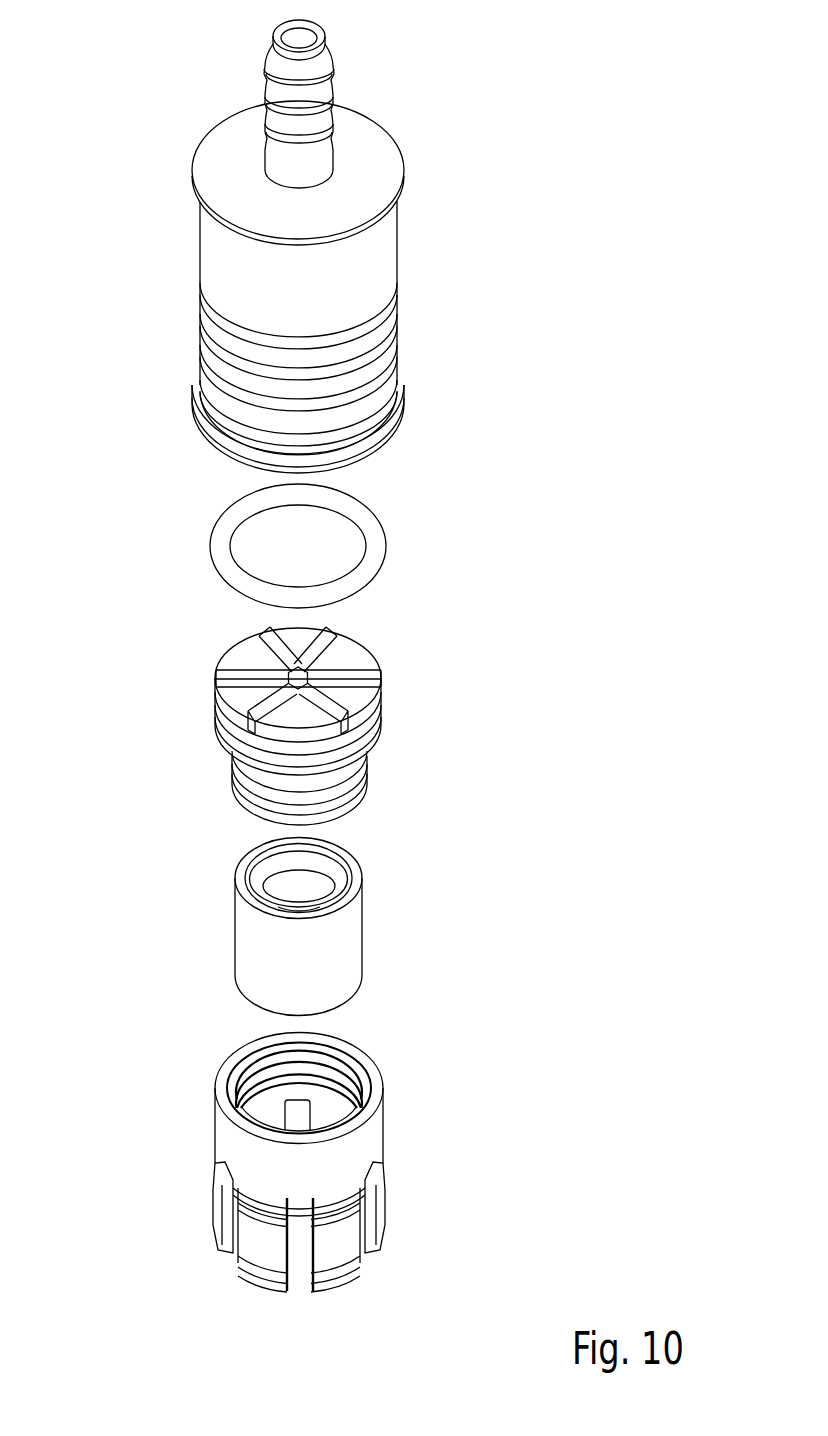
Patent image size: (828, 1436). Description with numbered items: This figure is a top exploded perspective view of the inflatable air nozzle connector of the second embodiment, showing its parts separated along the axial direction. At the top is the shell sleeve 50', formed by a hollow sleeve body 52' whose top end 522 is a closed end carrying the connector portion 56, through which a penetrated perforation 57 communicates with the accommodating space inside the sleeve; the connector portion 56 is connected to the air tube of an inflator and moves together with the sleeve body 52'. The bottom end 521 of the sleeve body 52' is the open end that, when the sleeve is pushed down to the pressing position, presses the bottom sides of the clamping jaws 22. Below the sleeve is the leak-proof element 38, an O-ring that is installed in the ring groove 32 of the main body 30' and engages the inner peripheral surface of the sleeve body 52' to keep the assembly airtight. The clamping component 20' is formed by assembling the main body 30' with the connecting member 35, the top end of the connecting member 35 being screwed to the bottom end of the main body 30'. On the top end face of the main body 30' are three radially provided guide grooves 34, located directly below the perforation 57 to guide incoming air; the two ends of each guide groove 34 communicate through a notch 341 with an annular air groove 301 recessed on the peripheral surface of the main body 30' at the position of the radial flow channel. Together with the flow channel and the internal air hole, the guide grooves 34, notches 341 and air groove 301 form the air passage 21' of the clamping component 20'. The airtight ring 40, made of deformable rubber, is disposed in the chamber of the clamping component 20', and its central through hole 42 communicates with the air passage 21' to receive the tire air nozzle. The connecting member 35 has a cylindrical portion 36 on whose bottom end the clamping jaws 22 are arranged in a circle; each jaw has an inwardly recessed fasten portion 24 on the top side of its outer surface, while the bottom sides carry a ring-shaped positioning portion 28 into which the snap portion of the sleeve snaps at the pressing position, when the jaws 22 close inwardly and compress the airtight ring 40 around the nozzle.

The shell sleeve 50' is at (315, 236).
The perforation 57 is at (293, 38).
The connector portion 56 is at (328, 92).
The top end 522 is at (190, 178).
The sleeve body 52' is at (362, 328).
The bottom end 521 is at (215, 443).
The leak-proof element 38 is at (373, 532).
The clamping component 20' is at (378, 707).
The main body 30' is at (336, 713).
The guide grooves 34 is at (250, 680).
The notch 341 is at (381, 695).
The ring groove 32 is at (232, 790).
The air passage 21' is at (402, 783).
The air groove 301 is at (367, 779).
The airtight ring 40 is at (367, 918).
The through hole 42 is at (287, 888).
The connecting member 35 is at (400, 1088).
The cylindrical portion 36 is at (230, 1141).
The clamping jaws 22 is at (260, 1236).
The fasten portion 24 is at (337, 1212).
The positioning portion 28 is at (338, 1267).